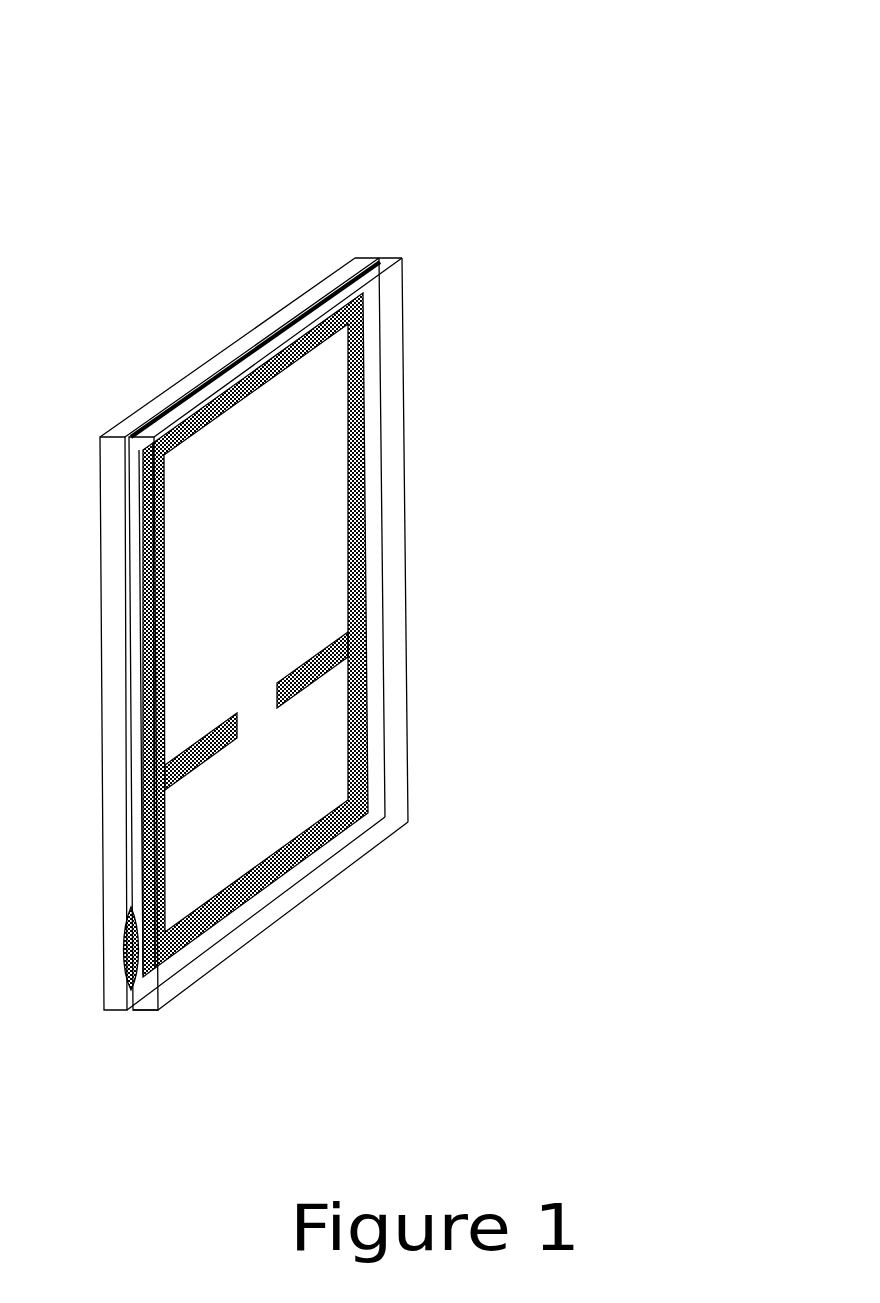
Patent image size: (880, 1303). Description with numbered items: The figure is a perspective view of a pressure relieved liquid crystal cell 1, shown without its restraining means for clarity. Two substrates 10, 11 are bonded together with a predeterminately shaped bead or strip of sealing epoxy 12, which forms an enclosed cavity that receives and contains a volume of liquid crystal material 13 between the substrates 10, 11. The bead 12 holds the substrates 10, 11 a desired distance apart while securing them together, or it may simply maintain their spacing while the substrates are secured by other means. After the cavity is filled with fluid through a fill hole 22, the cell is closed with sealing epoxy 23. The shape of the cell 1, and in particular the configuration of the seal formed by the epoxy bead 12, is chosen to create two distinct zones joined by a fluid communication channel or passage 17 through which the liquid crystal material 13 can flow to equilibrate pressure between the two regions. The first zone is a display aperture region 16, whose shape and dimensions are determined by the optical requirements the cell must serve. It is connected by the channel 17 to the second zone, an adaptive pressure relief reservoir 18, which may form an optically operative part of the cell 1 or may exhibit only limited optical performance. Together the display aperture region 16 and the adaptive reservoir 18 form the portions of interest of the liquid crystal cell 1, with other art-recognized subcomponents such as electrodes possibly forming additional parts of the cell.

The cell 1 is at (118, 130).
The substrate 10 is at (356, 252).
The substrate 11 is at (403, 253).
The bead of sealing epoxy 12 is at (362, 307).
The liquid crystal material 13 is at (256, 628).
The display aperture region 16 is at (325, 530).
The fluid communication channel 17 is at (270, 714).
The adaptive pressure relief reservoir 18 is at (298, 788).
The fill hole 22 is at (140, 943).
The sealing epoxy 23 is at (148, 975).